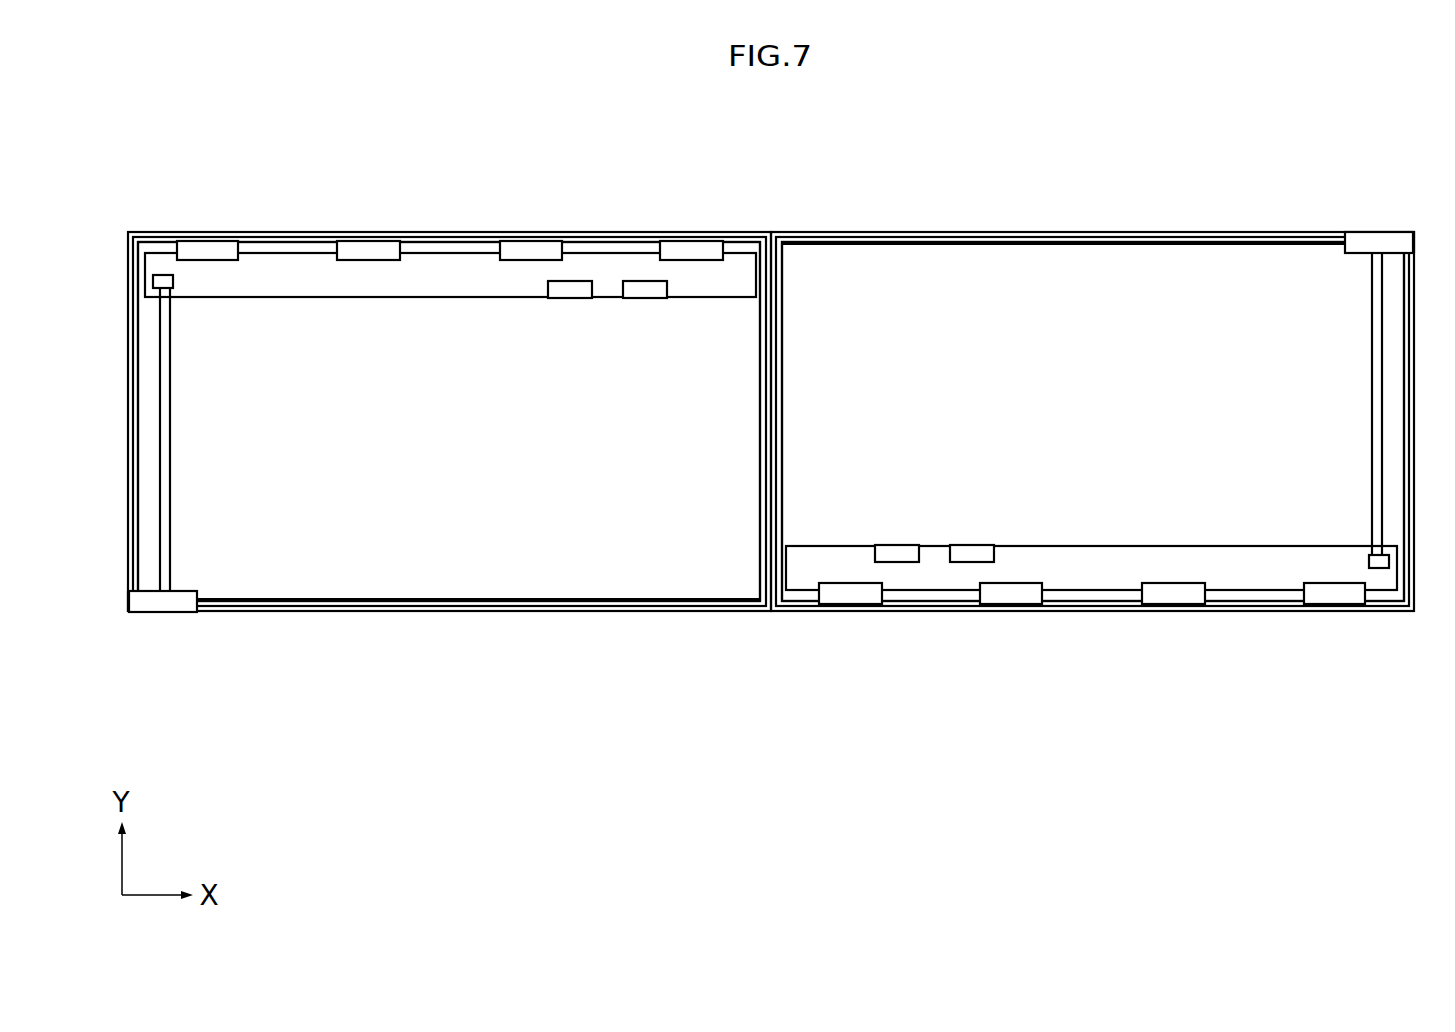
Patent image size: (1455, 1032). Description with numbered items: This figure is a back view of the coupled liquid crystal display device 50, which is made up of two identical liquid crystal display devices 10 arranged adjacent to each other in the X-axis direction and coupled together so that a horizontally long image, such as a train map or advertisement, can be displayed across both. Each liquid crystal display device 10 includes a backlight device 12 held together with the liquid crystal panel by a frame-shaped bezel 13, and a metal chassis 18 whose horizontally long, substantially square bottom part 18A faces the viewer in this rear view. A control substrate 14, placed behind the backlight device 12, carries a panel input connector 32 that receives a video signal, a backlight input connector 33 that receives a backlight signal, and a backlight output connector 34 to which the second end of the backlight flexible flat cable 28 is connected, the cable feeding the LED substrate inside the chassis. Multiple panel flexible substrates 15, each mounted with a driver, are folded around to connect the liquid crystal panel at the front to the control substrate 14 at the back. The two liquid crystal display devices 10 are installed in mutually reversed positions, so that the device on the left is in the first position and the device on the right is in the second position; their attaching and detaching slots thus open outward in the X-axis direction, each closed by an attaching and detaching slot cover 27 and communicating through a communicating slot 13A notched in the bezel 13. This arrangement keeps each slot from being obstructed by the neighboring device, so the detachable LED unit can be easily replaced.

The liquid crystal display device 10 is at (947, 232).
The backlight device 12 is at (1015, 264).
The bezel 13 is at (1085, 237).
The communicating slot 13A is at (1414, 240).
The control substrate 14 is at (444, 272).
The panel flexible substrate 15 is at (206, 248).
The chassis 18 is at (1160, 243).
The bottom part 18A is at (1235, 249).
The attaching and detaching slot cover 27 is at (1372, 240).
The backlight flexible flat cable 28 is at (1375, 283).
The panel input connector 32 is at (640, 288).
The backlight input connector 33 is at (575, 288).
The backlight output connector 34 is at (161, 278).
The coupled liquid crystal display device 50 is at (728, 668).